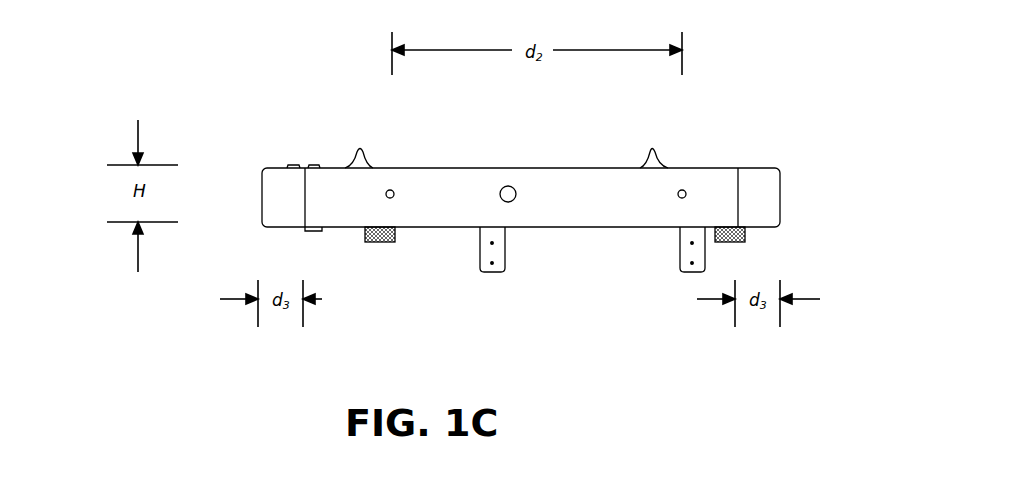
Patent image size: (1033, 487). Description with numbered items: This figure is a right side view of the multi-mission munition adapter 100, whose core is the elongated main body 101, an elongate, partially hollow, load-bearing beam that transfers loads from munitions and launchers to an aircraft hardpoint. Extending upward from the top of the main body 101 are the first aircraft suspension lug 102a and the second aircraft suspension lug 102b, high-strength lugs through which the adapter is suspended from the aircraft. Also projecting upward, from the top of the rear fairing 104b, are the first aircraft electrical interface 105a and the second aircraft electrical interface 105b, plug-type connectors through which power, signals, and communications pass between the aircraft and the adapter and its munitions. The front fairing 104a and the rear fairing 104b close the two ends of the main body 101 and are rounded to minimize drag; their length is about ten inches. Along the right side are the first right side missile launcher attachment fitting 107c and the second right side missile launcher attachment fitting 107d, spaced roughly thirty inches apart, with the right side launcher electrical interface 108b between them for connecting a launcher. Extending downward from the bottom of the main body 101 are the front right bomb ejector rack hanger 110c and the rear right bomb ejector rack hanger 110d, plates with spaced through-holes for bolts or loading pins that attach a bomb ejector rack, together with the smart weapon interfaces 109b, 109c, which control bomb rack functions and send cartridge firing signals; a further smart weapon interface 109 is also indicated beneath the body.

The multi-mission munition adapter 100 is at (823, 367).
The elongated main body 101 is at (582, 167).
The first aircraft suspension lug 102a is at (652, 146).
The second aircraft suspension lug 102b is at (359, 145).
The front fairing 104a is at (772, 167).
The rear fairing 104b is at (263, 208).
The first aircraft electrical interface 105a is at (313, 164).
The second aircraft electrical interface 105b is at (291, 165).
The first right side missile launcher attachment fitting 107c is at (678, 193).
The second right side missile launcher attachment fitting 107d is at (395, 192).
The right side launcher electrical interface 108b is at (505, 188).
The foot 109 is at (312, 232).
The smart weapon interface 109b is at (715, 243).
The smart weapon interface 109c is at (394, 243).
The front right bomb ejector rack hanger 110c is at (680, 240).
The rear right bomb ejector rack hanger 110d is at (480, 242).